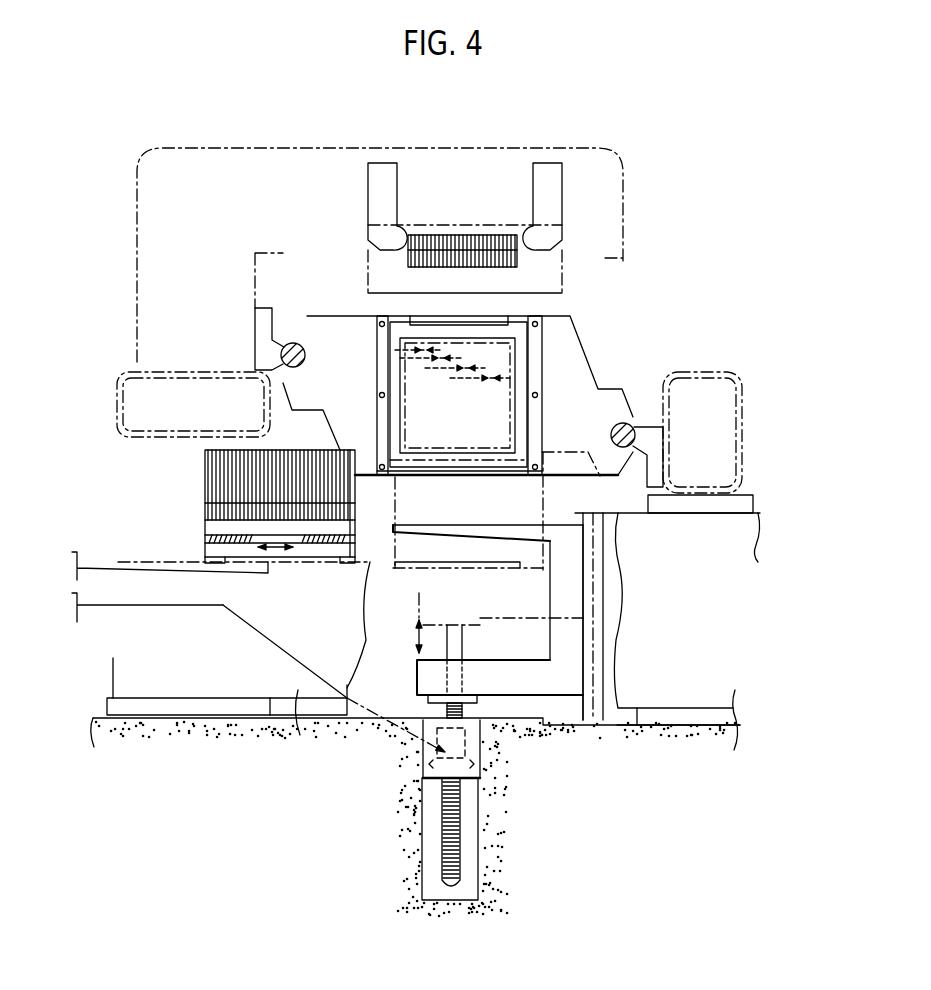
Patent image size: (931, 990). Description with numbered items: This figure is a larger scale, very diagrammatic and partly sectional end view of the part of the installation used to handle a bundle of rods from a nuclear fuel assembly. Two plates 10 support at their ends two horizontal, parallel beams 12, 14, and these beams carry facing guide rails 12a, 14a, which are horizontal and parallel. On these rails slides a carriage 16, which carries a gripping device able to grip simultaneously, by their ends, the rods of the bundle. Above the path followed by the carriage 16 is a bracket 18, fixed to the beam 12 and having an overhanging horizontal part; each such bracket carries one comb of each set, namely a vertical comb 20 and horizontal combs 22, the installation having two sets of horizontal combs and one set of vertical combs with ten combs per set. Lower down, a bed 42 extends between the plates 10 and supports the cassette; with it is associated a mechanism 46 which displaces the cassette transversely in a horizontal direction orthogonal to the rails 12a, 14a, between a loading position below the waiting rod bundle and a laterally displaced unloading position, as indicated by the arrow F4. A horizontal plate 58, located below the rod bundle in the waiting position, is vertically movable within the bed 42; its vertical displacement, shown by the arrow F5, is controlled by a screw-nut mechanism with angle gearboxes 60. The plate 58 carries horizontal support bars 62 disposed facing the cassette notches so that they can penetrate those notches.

The plate 10 is at (667, 631).
The beam 12 is at (172, 372).
The guide rail 12a is at (294, 343).
The beam 14 is at (743, 386).
The guide rail 14a is at (633, 424).
The carriage 16 is at (577, 350).
The bracket 18 is at (457, 148).
The vertical comb 20 is at (451, 234).
The horizontal comb 22 is at (373, 181).
The bed 42 is at (227, 716).
The mechanism 46 is at (157, 570).
The horizontal plate 58 is at (507, 683).
The screw-nut mechanism with angle gearboxes 60 is at (302, 659).
The horizontal support bar 62 is at (433, 528).
The arrow F4 is at (278, 553).
The arrow F5 is at (412, 641).